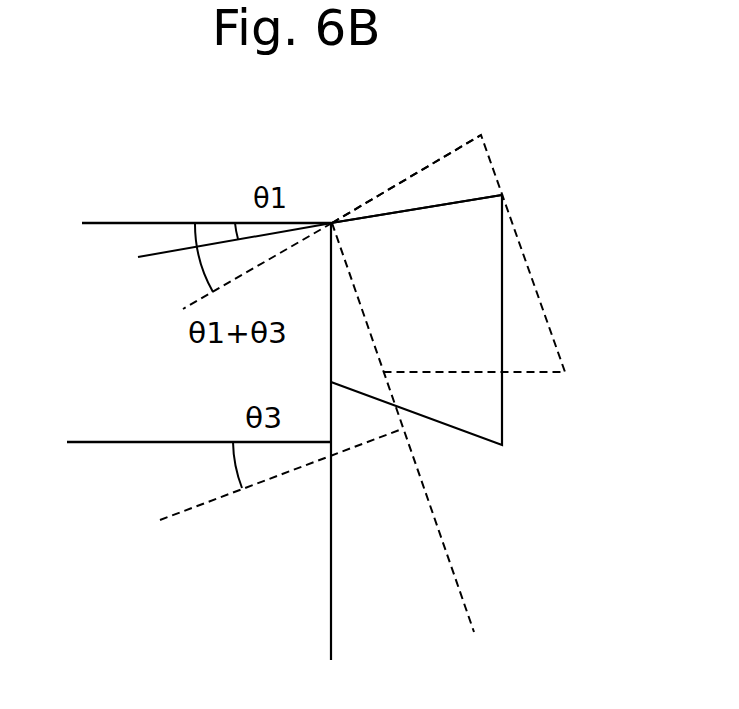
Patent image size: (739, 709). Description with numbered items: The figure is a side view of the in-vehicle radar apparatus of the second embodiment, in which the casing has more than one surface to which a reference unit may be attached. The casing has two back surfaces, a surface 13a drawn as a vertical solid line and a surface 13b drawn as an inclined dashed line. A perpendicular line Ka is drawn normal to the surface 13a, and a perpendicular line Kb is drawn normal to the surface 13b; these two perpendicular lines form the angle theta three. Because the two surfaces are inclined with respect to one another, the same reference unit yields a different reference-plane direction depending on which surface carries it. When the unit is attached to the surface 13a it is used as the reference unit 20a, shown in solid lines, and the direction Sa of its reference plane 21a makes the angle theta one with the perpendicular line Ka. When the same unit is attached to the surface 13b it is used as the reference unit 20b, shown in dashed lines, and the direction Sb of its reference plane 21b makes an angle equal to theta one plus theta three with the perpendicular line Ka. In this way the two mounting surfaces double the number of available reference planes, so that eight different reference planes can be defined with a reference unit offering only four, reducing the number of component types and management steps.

The surface 13a is at (331, 607).
The surface 13b is at (450, 560).
The reference unit 20a is at (505, 253).
The reference unit 20b is at (538, 297).
The reference plane 21a is at (452, 200).
The reference plane 21b is at (408, 180).
The perpendicular line Ka is at (199, 312).
The perpendicular line Kb is at (281, 495).
The direction of the reference plane Sa is at (226, 259).
The direction of the reference plane Sb is at (238, 279).